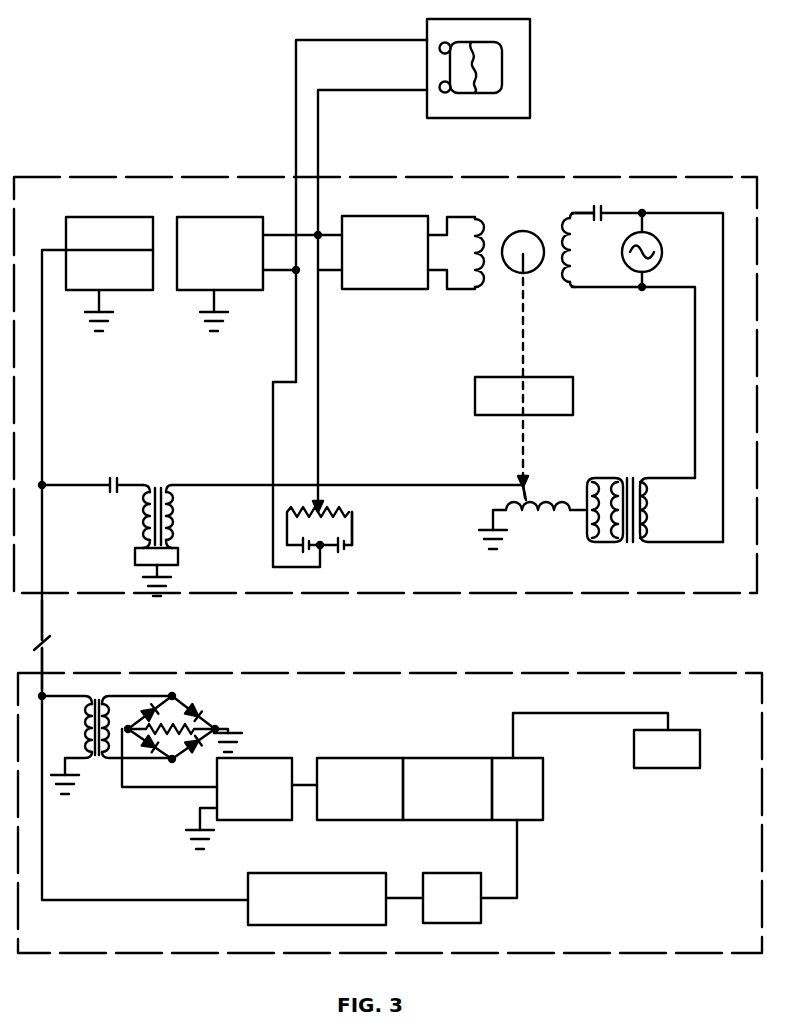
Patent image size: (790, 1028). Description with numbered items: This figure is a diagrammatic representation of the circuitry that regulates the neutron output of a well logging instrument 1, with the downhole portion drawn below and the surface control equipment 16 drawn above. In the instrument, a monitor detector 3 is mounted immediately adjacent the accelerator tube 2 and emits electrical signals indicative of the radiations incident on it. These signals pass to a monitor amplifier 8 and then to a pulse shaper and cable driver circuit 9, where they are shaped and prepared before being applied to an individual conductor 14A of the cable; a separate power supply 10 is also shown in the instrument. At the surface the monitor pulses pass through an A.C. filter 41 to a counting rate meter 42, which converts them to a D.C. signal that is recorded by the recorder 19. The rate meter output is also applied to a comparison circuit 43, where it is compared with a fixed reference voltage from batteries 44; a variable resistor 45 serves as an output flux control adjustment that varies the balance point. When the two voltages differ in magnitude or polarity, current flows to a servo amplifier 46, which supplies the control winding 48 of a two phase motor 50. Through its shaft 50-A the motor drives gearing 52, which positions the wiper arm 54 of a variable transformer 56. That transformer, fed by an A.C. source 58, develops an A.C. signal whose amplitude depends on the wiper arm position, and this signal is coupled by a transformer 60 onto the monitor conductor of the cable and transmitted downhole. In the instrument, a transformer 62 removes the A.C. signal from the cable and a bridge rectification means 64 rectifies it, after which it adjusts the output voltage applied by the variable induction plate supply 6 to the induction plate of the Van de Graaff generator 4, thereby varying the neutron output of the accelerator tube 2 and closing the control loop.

The well logging instrument 1 is at (564, 672).
The accelerator tube 2 is at (442, 758).
The monitor detector 3 is at (530, 758).
The Van de Graaff generator 4 is at (356, 758).
The variable induction plate supply 6 is at (282, 758).
The monitor amplifier 8 is at (466, 873).
The pulse shaper and cable driver circuit 9 is at (333, 873).
The power supply 10 is at (700, 751).
The conductor 14A is at (42, 630).
The surface control equipment 16 is at (540, 594).
The recorder 19 is at (530, 34).
The A.C. filter 41 is at (146, 217).
The counting rate meter 42 is at (233, 217).
The comparison circuit 43 is at (356, 541).
The batteries 44 is at (324, 531).
The variable resistor 45 is at (310, 513).
The servo amplifier 46 is at (415, 216).
The control winding 48 is at (497, 221).
The two phase motor 50 is at (519, 230).
The motor shaft 50-A is at (526, 283).
The gearing 52 is at (511, 377).
The wiper arm 54 is at (528, 493).
The variable transformer 56 is at (540, 512).
The A.C. source 58 is at (622, 252).
The coupling means 60 is at (158, 490).
The signal removing means 62 is at (90, 701).
The rectification means 64 is at (190, 701).